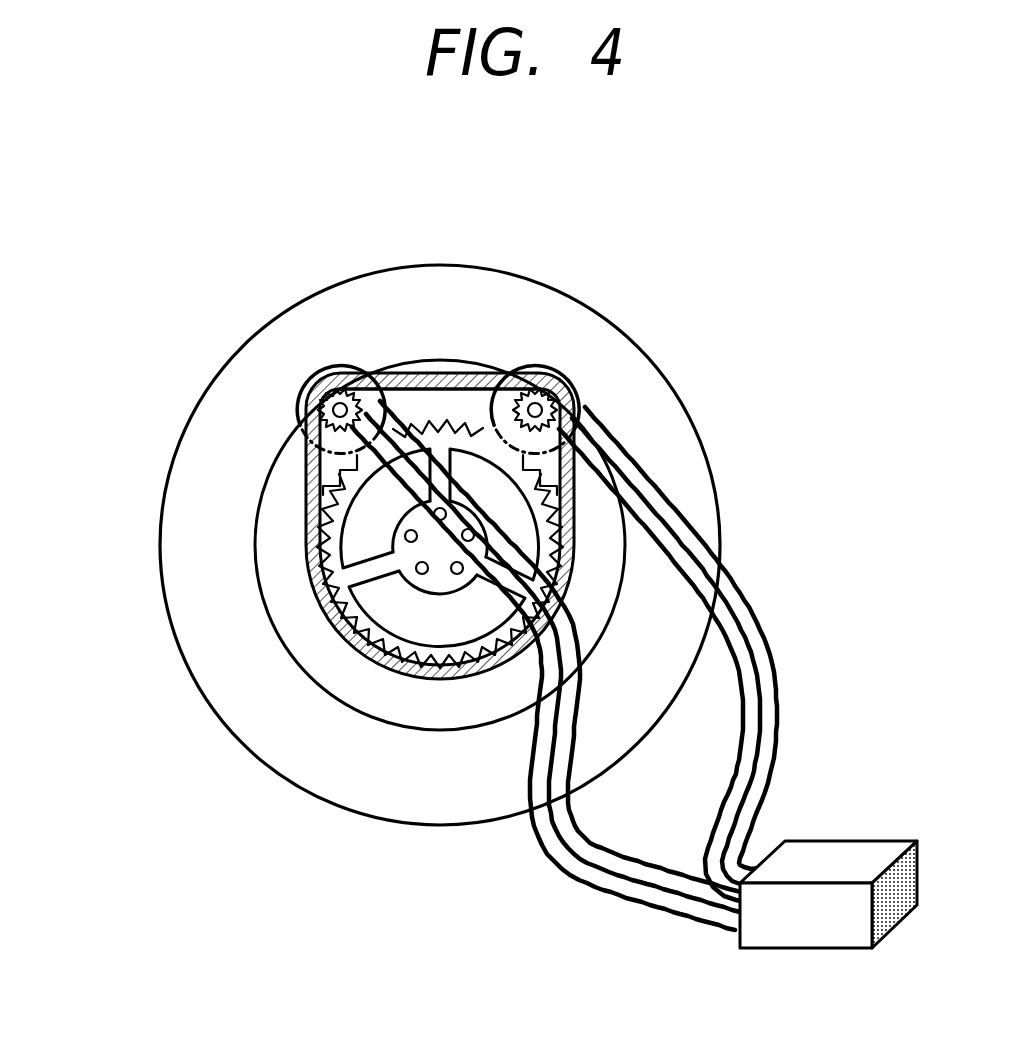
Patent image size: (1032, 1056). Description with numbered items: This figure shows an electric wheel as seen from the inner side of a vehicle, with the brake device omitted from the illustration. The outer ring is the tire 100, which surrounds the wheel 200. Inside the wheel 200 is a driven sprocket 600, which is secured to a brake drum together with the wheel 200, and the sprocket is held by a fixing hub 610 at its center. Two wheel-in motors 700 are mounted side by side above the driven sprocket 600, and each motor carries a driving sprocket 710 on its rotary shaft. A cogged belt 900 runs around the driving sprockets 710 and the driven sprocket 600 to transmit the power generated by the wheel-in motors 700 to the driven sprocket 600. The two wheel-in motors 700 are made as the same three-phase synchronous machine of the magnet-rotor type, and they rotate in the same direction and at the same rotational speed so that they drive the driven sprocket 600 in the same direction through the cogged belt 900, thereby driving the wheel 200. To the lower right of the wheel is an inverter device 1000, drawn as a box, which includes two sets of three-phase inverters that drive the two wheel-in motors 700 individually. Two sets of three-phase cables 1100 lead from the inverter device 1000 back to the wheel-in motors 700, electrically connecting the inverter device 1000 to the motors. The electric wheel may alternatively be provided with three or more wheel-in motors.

The tire 100 is at (677, 428).
The wheel 200 is at (403, 705).
The driven sprocket 600 is at (367, 623).
The fixing hub 610 is at (377, 573).
The wheel-in motors 700 is at (298, 394).
The driving sprocket 710 is at (303, 447).
The cogged belt 900 is at (395, 372).
The inverter device 1000 is at (858, 850).
The three-phase cables 1100 is at (702, 663).